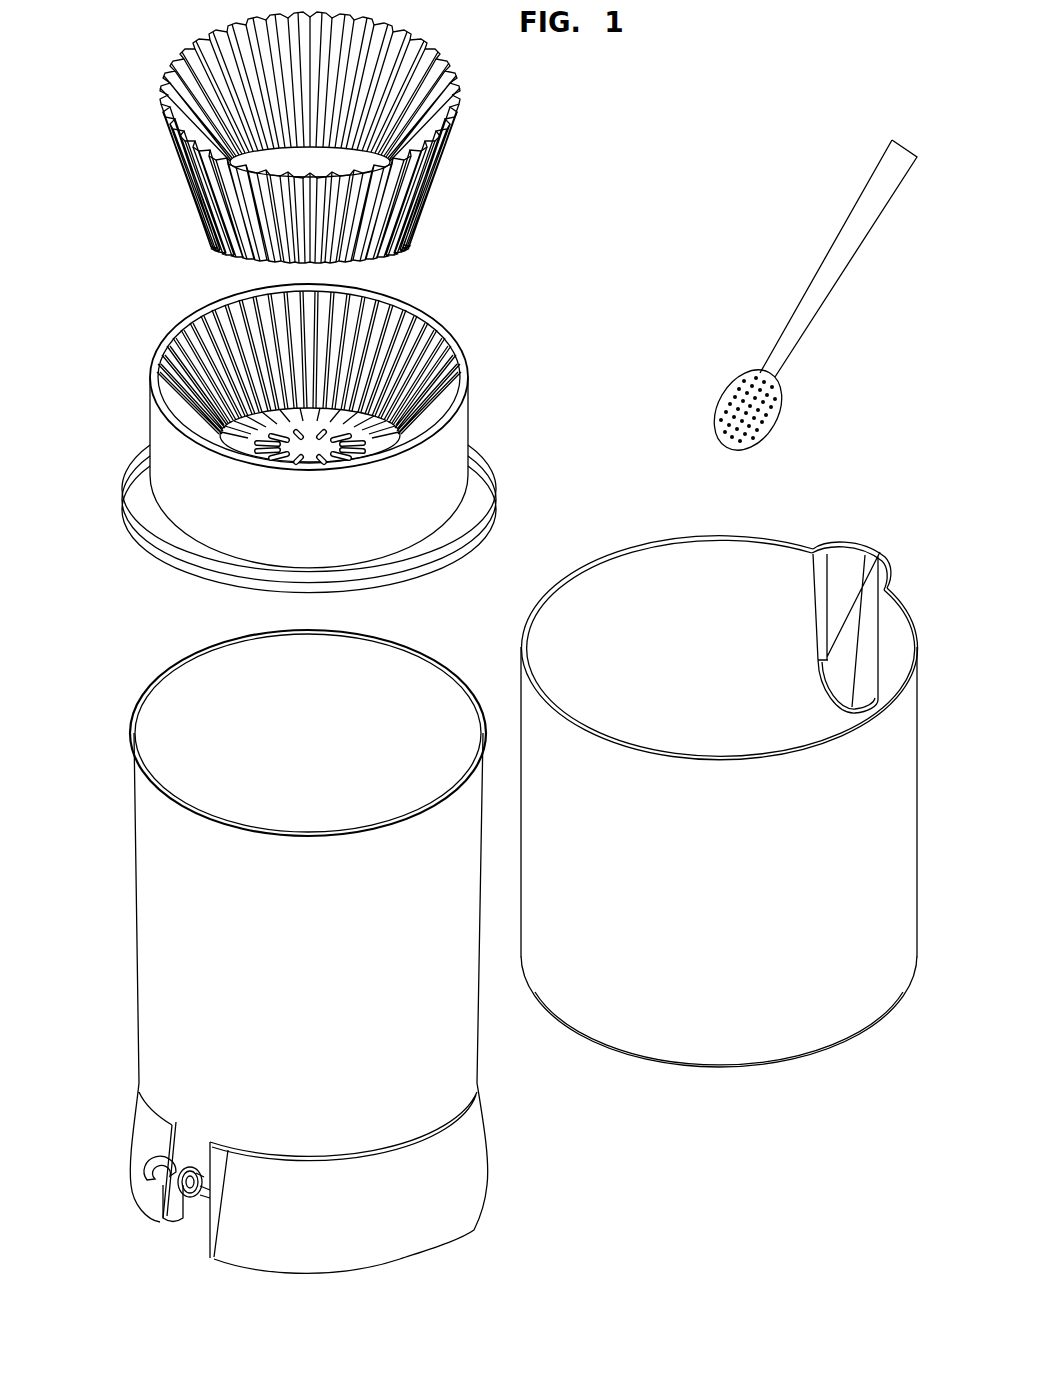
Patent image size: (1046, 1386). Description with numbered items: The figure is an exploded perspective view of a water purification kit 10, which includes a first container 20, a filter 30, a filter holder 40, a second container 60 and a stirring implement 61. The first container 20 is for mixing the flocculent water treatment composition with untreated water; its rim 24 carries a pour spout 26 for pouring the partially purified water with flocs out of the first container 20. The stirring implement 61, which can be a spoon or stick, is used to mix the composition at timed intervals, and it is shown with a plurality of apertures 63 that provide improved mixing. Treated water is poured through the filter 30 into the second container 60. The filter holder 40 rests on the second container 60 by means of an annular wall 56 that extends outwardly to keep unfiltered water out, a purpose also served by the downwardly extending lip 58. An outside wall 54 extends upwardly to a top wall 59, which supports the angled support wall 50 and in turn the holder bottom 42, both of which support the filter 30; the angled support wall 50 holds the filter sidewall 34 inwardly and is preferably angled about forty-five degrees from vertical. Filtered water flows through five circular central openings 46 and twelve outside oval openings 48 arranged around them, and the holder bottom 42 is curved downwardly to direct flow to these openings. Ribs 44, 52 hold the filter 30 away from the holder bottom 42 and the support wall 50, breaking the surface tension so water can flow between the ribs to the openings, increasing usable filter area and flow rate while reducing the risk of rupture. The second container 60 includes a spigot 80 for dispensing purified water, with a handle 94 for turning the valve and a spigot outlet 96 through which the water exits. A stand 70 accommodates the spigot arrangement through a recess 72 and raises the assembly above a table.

The water purification kit 10 is at (672, 172).
The first container 20 is at (808, 1050).
The pitcher rim 24 is at (682, 535).
The pour spout 26 is at (877, 555).
The filter 30 is at (466, 96).
The filter sidewall 34 is at (424, 184).
The filter holder 40 is at (482, 368).
The holder bottom 42 is at (287, 450).
The ribs 44 is at (280, 415).
The central openings 46 is at (330, 457).
The outside oval openings 48 is at (330, 432).
The angled support wall 50 is at (258, 316).
The ribs 52 is at (232, 356).
The outside wall 54 is at (150, 412).
The annular wall 56 is at (480, 483).
The downwardly extending lip 58 is at (500, 498).
The top wall 59 is at (420, 337).
The second container 60 is at (128, 833).
The stirring implement 61 is at (813, 278).
The apertures 63 is at (730, 420).
The stand 70 is at (448, 1177).
The recess 72 is at (197, 1223).
The spigot 80 is at (163, 1197).
The spigot handle hook 94 is at (148, 1160).
The spigot outlet 96 is at (172, 1222).